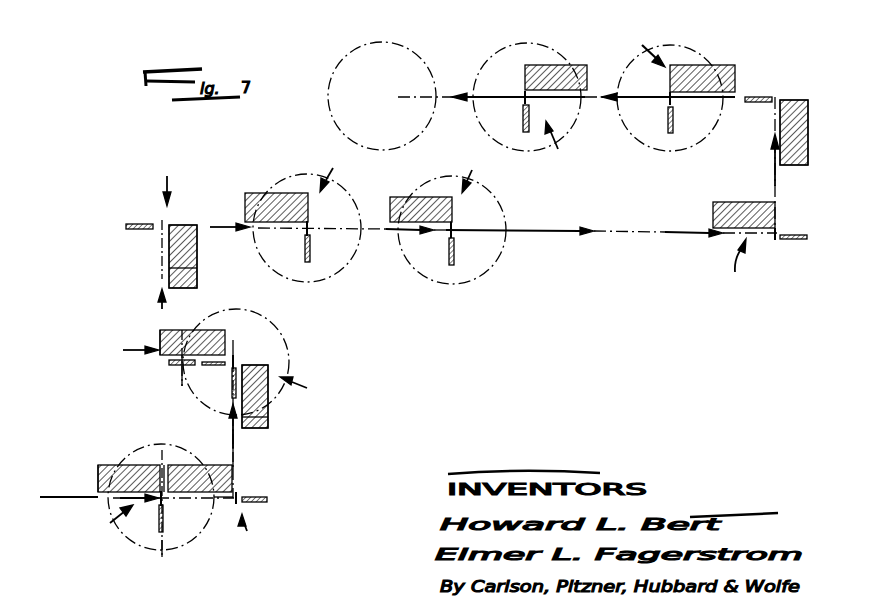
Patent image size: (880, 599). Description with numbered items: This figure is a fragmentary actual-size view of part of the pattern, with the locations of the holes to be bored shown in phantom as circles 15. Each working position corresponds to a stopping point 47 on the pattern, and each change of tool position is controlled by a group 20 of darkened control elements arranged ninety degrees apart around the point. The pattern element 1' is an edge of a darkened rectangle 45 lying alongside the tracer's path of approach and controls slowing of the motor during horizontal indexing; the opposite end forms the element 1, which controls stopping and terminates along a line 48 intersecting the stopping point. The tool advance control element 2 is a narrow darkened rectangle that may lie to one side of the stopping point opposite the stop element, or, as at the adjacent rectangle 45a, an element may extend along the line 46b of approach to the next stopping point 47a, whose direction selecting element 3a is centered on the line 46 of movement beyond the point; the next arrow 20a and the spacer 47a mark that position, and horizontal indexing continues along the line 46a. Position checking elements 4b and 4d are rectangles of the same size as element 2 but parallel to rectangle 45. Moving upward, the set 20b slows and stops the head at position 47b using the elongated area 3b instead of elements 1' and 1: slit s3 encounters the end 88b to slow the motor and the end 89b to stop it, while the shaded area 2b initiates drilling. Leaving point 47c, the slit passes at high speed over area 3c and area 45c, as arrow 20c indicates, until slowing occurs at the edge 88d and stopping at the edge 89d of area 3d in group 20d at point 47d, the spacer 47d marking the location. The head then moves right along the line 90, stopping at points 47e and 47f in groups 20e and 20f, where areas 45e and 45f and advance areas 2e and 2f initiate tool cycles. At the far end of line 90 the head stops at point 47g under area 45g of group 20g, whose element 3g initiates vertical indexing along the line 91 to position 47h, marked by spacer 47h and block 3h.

The mandrel circle 15 is at (343, 57).
The group of control elements 20 is at (374, 284).
The stopping point 47 is at (523, 95).
The stopping point 47h is at (778, 88).
The block 3h is at (793, 127).
The line of vertical indexing 91 is at (777, 183).
The pattern area 45g is at (747, 205).
The direction changing element 3g is at (796, 234).
The stopping point 47g is at (775, 236).
The group of control elements 20g is at (735, 265).
The pattern group 20d is at (168, 179).
The stopping point 47d is at (161, 221).
The edge of area 3d 89d is at (186, 225).
The position checking element 4d is at (127, 229).
The direction selecting area 3d is at (172, 268).
The edge of area 3d 88d is at (197, 288).
The line of horizontal indexing 90 is at (222, 231).
The plate 45e is at (276, 200).
The direction arrow 20e is at (333, 170).
The stopping point 47e is at (311, 229).
The tool advance control area 2e is at (311, 250).
The plate 45f is at (417, 205).
The direction arrow 20f is at (479, 173).
The stopping point 47f is at (452, 230).
The pin 2f is at (455, 253).
The stop control element 1 is at (158, 406).
The direction arrow 20c is at (123, 351).
The stopping point 47c is at (166, 364).
The direction selecting area 3c is at (182, 380).
The pattern area 45c is at (186, 330).
The slow down control element 1' is at (163, 404).
The stopping point 47b is at (236, 364).
The position checking element 4b is at (214, 366).
The tool advance control area 2b is at (231, 385).
The end of area 3b 89b is at (268, 371).
The set of control elements 20b is at (307, 388).
The direction selecting element 3b is at (262, 417).
The end of area 3b 88b is at (263, 430).
The darkened rectangle 45 is at (128, 465).
The line of movement 46 is at (75, 496).
The plate 45a is at (212, 465).
The line of approach 46b is at (235, 467).
The stopping point 47a is at (238, 497).
The direction selecting element 3a is at (268, 502).
The tool advance control element 2 is at (158, 520).
The line of horizontal indexing 46a is at (222, 513).
The direction arrow 20a is at (253, 532).
The line 48 is at (171, 549).